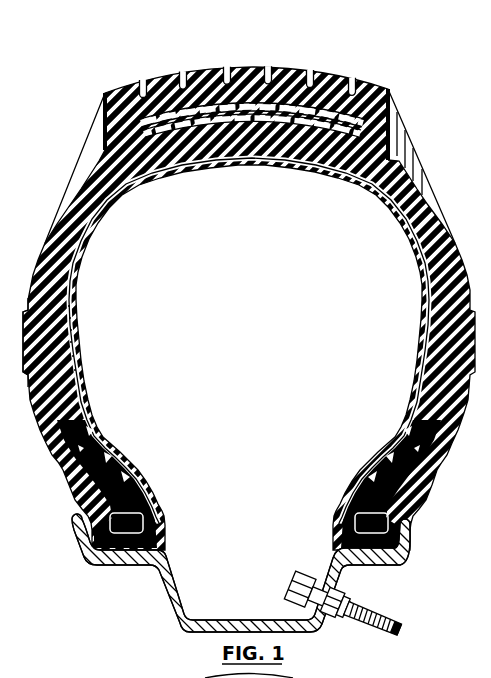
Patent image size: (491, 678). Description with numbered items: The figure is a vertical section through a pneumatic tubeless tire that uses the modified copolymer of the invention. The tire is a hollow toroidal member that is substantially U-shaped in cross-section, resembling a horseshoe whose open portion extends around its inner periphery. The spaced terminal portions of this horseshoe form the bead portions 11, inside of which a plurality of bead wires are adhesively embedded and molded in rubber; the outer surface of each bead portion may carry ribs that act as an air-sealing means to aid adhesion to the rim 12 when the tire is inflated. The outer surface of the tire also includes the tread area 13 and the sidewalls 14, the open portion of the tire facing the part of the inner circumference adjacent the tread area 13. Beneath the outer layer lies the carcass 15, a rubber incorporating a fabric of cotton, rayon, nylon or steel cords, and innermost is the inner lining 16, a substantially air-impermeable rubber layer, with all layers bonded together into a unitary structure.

The bead portions 11 is at (160, 510).
The rim 12 is at (249, 617).
The tread area 13 is at (289, 72).
The sidewalls 14 is at (452, 440).
The carcass 15 is at (64, 337).
The inner lining 16 is at (424, 404).